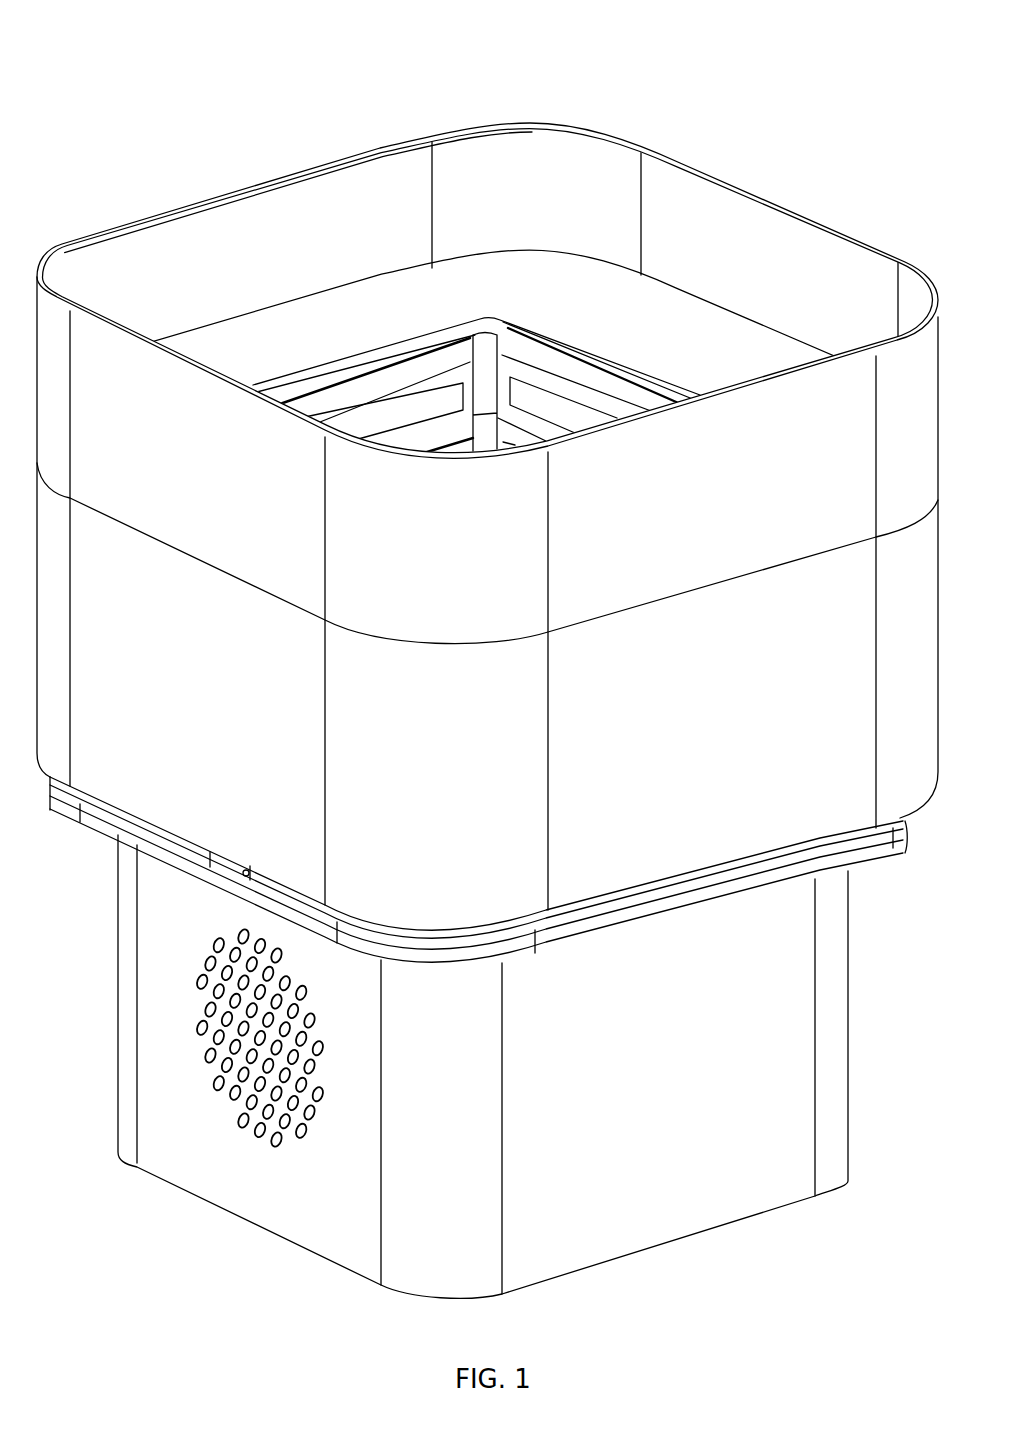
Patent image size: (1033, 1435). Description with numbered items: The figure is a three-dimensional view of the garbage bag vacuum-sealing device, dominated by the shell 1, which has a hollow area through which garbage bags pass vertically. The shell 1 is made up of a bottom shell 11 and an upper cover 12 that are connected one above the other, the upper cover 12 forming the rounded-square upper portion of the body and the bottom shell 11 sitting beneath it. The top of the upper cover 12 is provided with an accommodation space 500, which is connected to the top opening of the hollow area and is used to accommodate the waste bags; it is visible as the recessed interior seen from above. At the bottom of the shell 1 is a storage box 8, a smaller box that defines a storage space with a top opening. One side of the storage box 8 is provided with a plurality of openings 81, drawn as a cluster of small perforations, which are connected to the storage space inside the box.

The shell 1 is at (487, 664).
The bottom shell 11 is at (126, 563).
The upper cover 12 is at (188, 258).
The accommodation space 500 is at (397, 305).
The storage box 8 is at (483, 1075).
The openings 81 is at (233, 1094).